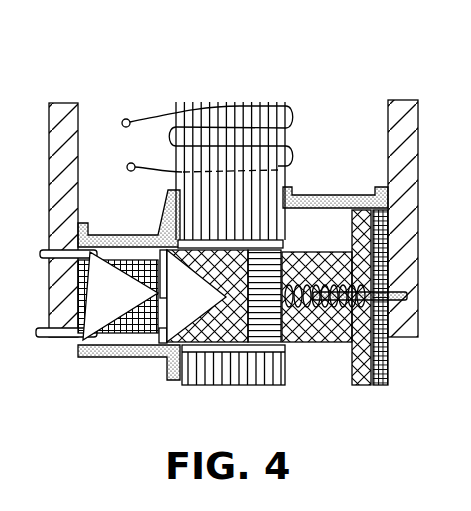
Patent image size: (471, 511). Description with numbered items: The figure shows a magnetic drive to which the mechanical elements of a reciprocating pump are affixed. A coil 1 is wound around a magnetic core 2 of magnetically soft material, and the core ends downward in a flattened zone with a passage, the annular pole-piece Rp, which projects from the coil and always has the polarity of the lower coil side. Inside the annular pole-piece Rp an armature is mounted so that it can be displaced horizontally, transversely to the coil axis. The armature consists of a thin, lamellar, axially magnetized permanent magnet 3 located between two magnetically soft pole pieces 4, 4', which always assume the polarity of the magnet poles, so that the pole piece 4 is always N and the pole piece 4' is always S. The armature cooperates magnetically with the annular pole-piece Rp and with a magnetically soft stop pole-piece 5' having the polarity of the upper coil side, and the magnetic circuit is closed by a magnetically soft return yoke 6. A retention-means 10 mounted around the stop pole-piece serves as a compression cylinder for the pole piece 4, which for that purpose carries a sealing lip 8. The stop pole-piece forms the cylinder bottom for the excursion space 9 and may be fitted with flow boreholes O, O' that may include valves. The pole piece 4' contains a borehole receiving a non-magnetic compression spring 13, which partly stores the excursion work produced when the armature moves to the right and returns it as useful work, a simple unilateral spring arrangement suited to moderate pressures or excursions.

The coil 1 is at (124, 159).
The magnetic core 2 is at (222, 112).
The permanent magnet 3 is at (283, 252).
The pole piece 4 is at (207, 296).
The pole piece 4' is at (343, 297).
The stop pole-piece 5' is at (381, 319).
The return yoke 6 is at (405, 148).
The sealing lip 8 is at (153, 253).
The excursion space 9 is at (177, 328).
The retention-means 10 is at (117, 357).
The compression spring 13 is at (342, 308).
The flow borehole O is at (55, 245).
The flow borehole O' is at (55, 348).
The north polarity N is at (230, 337).
The south polarity S is at (308, 337).
The annular pole-piece Rp is at (231, 372).